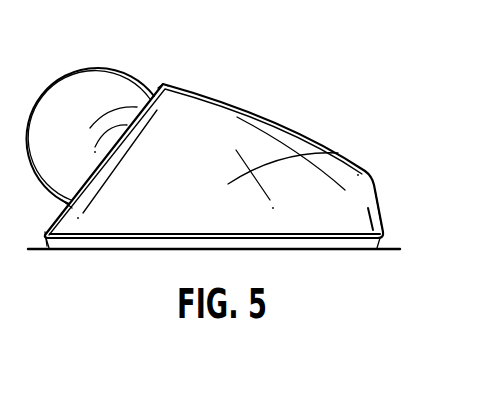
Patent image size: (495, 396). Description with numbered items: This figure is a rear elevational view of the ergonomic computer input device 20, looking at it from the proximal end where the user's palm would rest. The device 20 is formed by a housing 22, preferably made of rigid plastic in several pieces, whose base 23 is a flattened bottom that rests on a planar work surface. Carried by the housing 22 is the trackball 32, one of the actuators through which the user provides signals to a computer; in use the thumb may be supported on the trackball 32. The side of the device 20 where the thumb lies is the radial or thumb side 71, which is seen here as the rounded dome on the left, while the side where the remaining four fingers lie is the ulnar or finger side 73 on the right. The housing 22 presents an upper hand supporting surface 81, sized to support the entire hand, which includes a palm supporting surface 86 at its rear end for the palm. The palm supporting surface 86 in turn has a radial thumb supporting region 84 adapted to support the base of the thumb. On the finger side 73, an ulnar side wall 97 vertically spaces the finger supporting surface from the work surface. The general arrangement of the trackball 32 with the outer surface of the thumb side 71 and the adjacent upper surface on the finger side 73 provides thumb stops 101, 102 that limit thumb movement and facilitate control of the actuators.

The computer input device 20 is at (258, 67).
The housing 22 is at (280, 129).
The base 23 is at (105, 250).
The trackball 32 is at (118, 100).
The thumb side 71 is at (90, 92).
The finger side 73 is at (375, 95).
The upper hand supporting surface 81 is at (217, 142).
The thumb supporting region 84 is at (67, 207).
The palm supporting surface 86 is at (336, 155).
The ulnar side wall 97 is at (383, 203).
The thumb stop 101 is at (152, 88).
The thumb stop 102 is at (45, 234).